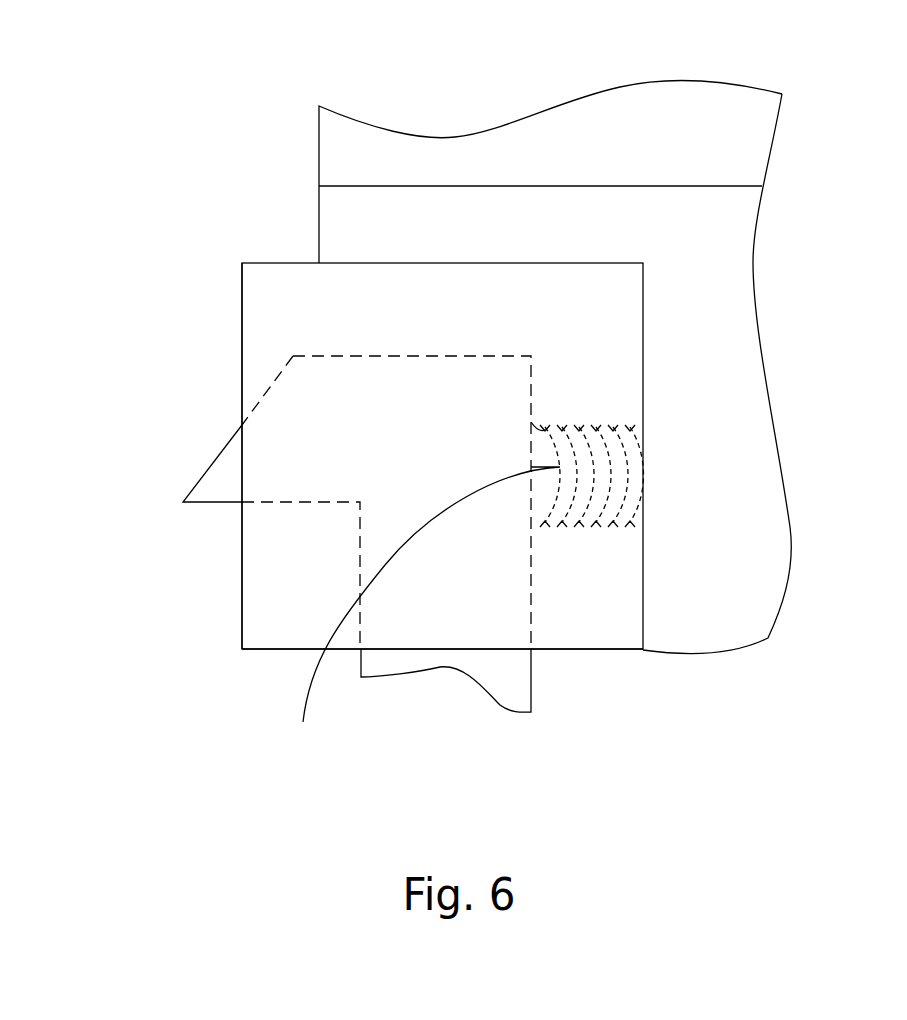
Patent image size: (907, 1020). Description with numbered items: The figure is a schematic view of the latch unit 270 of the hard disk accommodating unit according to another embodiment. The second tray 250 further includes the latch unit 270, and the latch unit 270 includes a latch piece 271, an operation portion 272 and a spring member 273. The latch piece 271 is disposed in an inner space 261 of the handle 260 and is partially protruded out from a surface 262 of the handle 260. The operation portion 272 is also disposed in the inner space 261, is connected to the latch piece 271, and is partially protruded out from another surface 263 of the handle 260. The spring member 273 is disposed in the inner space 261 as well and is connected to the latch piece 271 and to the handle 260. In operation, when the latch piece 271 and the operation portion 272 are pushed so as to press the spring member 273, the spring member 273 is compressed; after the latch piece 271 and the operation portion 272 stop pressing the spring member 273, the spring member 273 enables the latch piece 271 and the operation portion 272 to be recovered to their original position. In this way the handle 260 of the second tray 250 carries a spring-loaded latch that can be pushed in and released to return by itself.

The second tray 250 is at (527, 123).
The handle 260 is at (750, 588).
The inner space 261 is at (276, 263).
The surface 262 is at (242, 297).
The another surface 263 is at (598, 649).
The latch unit 270 is at (400, 778).
The latch piece 271 is at (215, 487).
The operation portion 272 is at (410, 680).
The spring member 273 is at (421, 620).